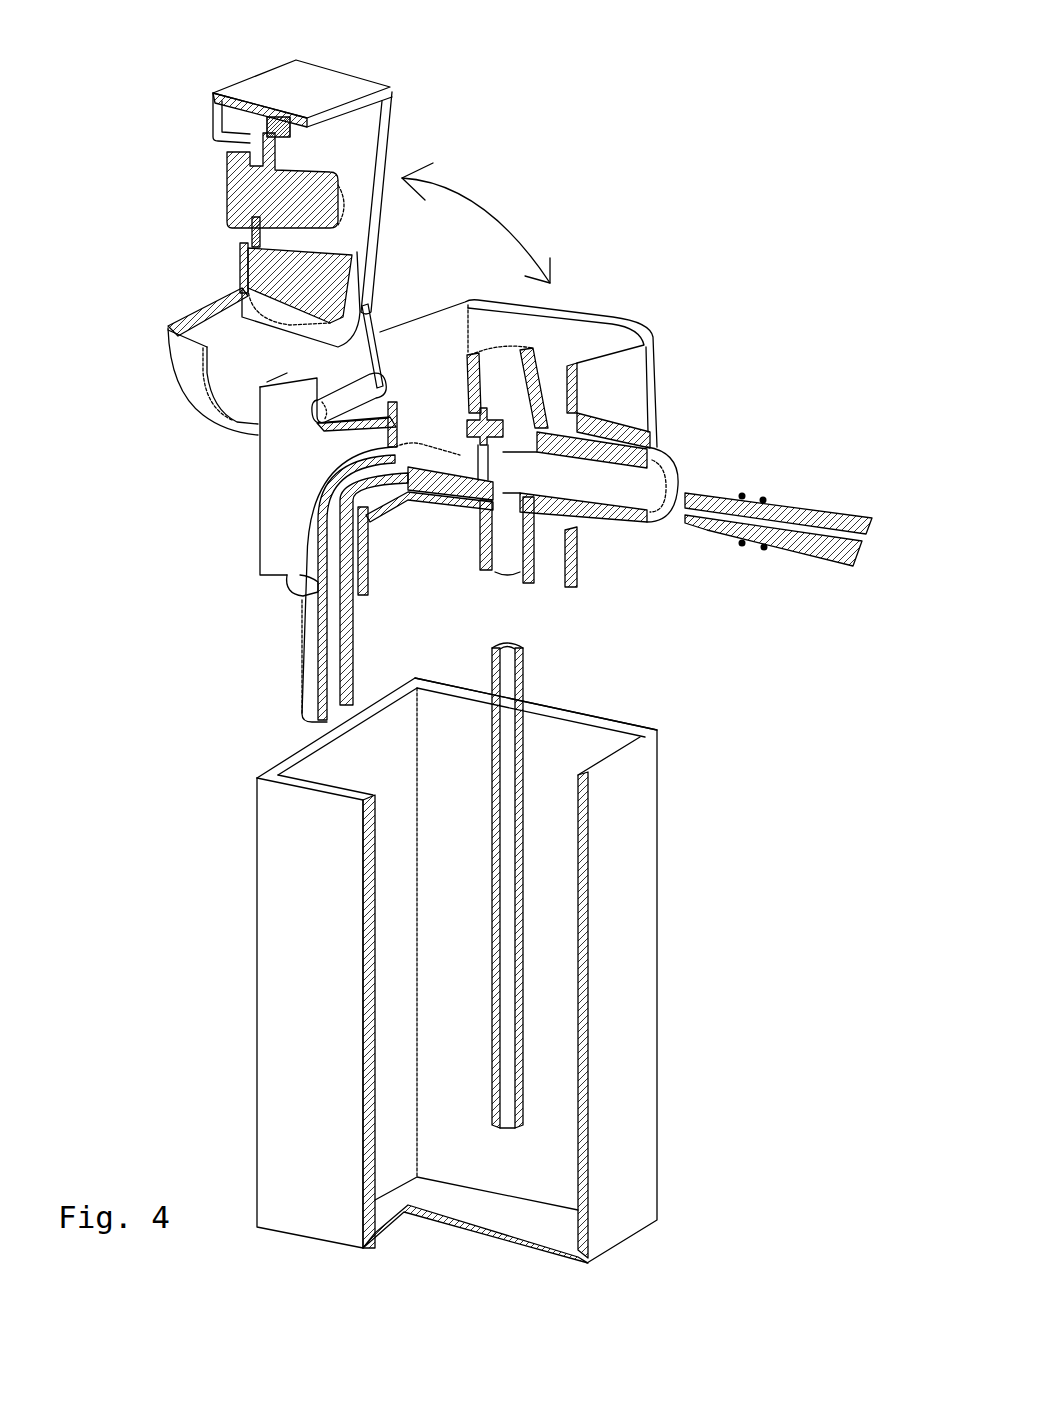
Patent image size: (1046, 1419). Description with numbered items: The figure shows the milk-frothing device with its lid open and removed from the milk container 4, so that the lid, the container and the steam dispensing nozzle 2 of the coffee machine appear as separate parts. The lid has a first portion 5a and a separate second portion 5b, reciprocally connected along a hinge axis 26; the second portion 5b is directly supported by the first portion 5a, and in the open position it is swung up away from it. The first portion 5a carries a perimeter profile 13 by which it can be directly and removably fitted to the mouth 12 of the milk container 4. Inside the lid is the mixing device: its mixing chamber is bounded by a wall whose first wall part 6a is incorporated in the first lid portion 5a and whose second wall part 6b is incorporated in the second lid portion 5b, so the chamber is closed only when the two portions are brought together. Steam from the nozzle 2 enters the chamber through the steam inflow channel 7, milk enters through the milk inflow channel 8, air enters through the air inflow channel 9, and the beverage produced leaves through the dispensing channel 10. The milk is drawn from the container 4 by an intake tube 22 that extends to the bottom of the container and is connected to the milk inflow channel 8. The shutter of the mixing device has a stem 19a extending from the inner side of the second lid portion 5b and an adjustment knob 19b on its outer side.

The steam dispensing nozzle 2 is at (788, 480).
The milk container 4 is at (285, 996).
The first portion of the lid 5a is at (268, 479).
The second portion of the lid 5b is at (180, 385).
The first wall part 6a is at (440, 460).
The second wall part 6b is at (308, 276).
The channel for the inflow of steam 7 is at (580, 483).
The channel for the inflow of milk 8 is at (480, 548).
The channel for the inflow of air 9 is at (540, 352).
The channel for dispensing the beverage 10 is at (322, 518).
The mouth of the container 12 is at (328, 755).
The perimeter profile 13 is at (578, 592).
The stem 19a is at (323, 181).
The adjustment knob 19b is at (225, 183).
The intake tube 22 is at (520, 970).
The hinge axis 26 is at (350, 388).